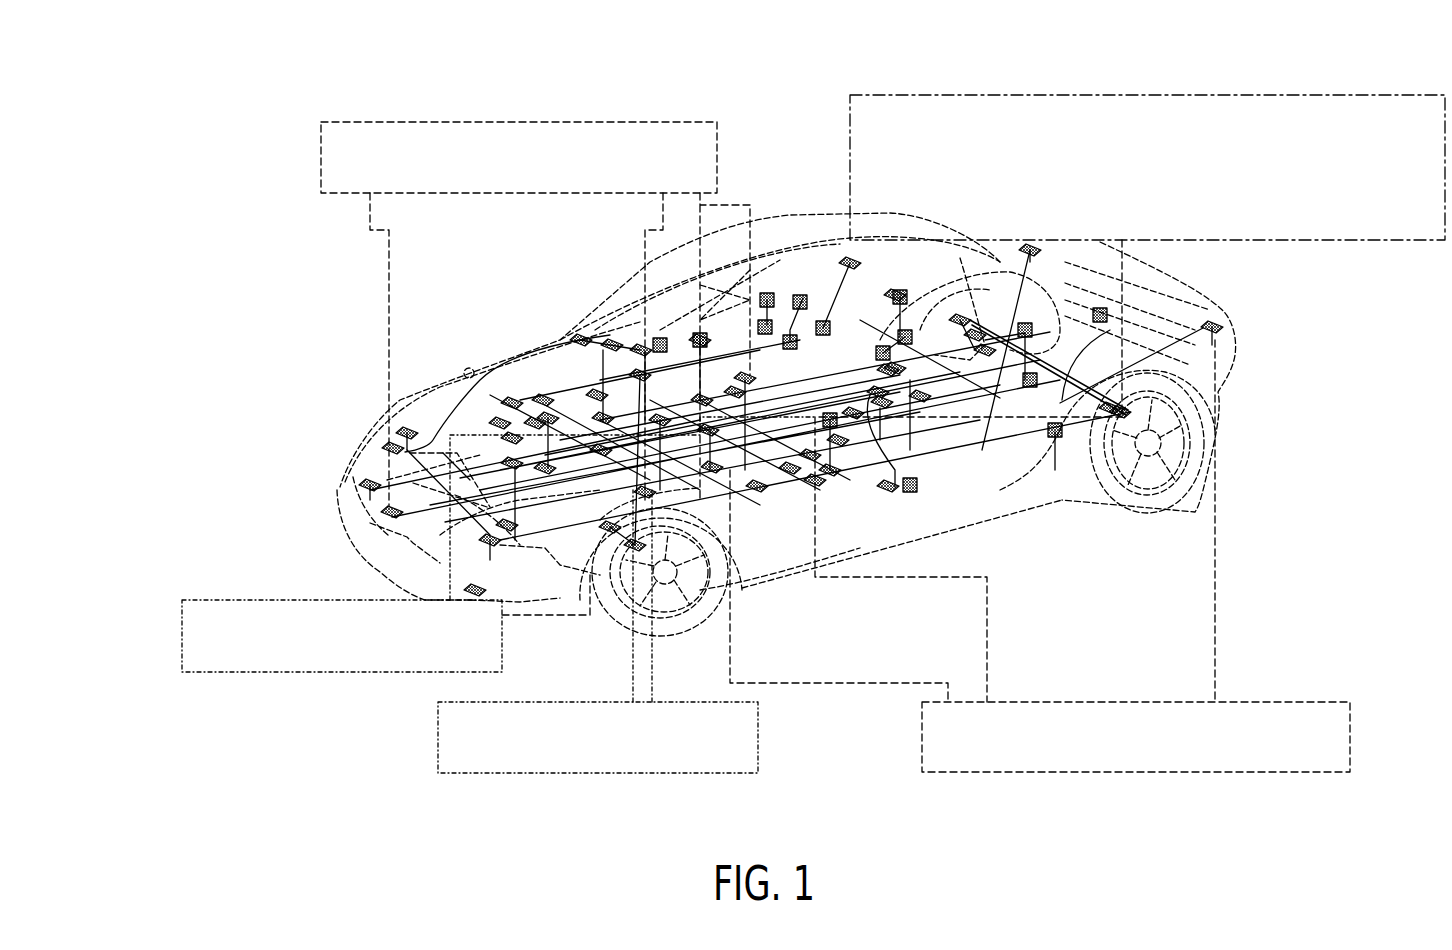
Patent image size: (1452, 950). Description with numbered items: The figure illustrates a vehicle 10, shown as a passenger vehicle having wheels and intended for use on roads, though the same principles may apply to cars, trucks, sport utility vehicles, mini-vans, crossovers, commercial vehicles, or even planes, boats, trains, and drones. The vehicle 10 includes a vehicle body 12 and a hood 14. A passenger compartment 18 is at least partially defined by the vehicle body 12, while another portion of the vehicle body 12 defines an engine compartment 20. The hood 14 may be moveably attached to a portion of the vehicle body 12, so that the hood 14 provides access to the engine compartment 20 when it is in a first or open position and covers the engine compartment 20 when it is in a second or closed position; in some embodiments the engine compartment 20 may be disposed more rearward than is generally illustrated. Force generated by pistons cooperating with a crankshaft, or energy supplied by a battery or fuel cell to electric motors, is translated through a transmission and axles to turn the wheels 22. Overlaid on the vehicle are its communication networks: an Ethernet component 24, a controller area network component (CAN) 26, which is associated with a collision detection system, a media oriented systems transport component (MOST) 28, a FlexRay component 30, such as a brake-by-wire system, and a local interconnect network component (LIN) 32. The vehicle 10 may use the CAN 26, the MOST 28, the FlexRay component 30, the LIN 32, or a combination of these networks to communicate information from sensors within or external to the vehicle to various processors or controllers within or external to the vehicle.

The vehicle 10 is at (145, 227).
The vehicle body 12 is at (882, 402).
The hood 14 is at (480, 362).
The passenger compartment 18 is at (658, 311).
The engine compartment 20 is at (350, 412).
The wheels 22 is at (600, 628).
The Ethernet component 24 is at (156, 617).
The controller area network component (CAN) 26 is at (296, 149).
The media oriented systems transport component (MOST) 28 is at (853, 83).
The FlexRay component 30 is at (418, 740).
The local interconnect network component (LIN) 32 is at (892, 747).